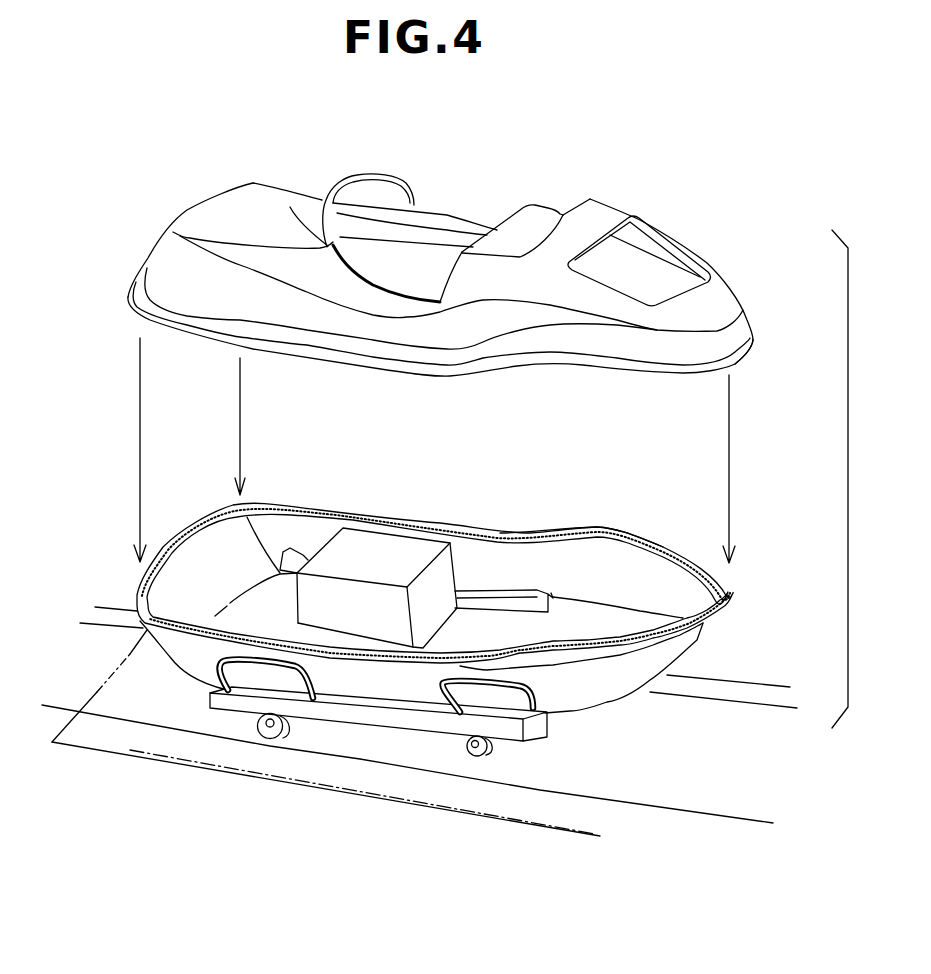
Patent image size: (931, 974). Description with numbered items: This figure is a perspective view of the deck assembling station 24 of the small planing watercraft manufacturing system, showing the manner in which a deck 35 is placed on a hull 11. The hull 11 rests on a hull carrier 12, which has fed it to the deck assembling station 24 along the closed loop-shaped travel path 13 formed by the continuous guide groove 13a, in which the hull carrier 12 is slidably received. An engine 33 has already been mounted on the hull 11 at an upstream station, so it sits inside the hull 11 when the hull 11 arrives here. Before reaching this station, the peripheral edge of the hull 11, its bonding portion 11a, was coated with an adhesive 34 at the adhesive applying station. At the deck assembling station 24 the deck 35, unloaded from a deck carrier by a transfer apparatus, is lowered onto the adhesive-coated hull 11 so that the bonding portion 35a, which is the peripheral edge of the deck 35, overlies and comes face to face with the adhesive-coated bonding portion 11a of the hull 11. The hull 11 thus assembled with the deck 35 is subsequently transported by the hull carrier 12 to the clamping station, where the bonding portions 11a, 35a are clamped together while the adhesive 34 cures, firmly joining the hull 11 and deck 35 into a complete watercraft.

The hull 11 is at (603, 683).
The bonding portion of the hull 11a is at (540, 533).
The hull carrier 12 is at (332, 705).
The travel path 13 is at (380, 747).
The guide groove 13a is at (727, 690).
The deck assembling station 24 is at (517, 807).
The engine 33 is at (387, 547).
The adhesive 34 is at (487, 527).
The deck 35 is at (597, 200).
The bonding portion of the deck 35a is at (760, 347).